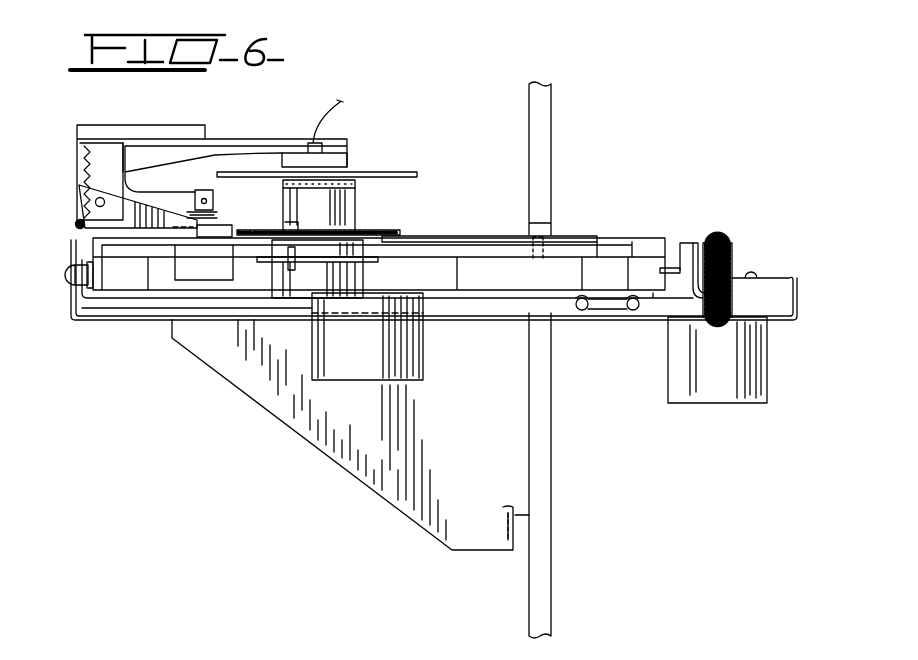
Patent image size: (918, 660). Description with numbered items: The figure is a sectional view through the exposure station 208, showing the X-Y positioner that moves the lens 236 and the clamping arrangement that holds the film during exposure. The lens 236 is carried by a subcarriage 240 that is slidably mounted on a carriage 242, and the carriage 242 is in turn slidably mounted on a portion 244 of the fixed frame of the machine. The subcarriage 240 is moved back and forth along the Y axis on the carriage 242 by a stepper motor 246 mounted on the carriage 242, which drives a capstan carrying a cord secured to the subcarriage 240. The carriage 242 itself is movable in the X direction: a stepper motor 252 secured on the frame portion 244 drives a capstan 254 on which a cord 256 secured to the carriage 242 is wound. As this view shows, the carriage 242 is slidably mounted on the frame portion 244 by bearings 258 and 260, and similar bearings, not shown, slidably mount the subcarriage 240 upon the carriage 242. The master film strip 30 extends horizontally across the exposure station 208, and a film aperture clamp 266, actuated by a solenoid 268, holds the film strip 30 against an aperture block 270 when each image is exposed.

The exposure station 208 is at (587, 144).
The master film strip 30 is at (392, 172).
The film aperture clamp 266 is at (348, 165).
The solenoid 268 is at (226, 232).
The aperture block 270 is at (356, 186).
The lens 236 is at (354, 210).
The subcarriage 240 is at (472, 236).
The bearing 258 is at (66, 286).
The carriage 242 is at (126, 300).
The frame portion 244 is at (76, 320).
The bearing 260 is at (628, 310).
The capstan 254 is at (722, 243).
The cord 256 is at (736, 268).
The stepper motor 252 is at (704, 395).
The stepper motor 246 is at (404, 372).